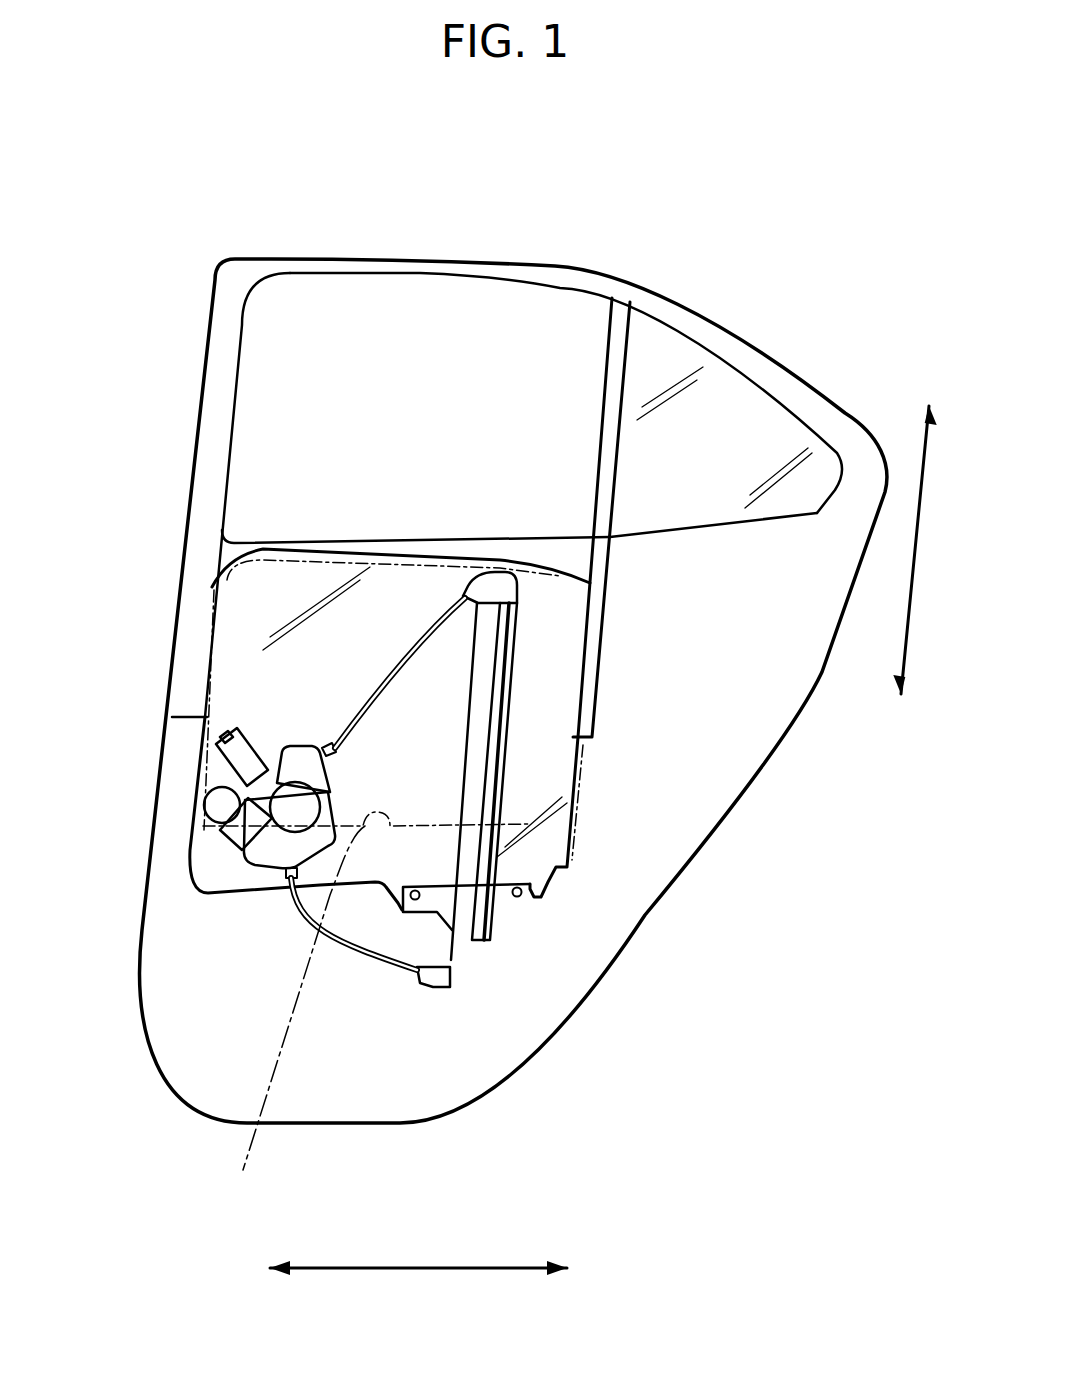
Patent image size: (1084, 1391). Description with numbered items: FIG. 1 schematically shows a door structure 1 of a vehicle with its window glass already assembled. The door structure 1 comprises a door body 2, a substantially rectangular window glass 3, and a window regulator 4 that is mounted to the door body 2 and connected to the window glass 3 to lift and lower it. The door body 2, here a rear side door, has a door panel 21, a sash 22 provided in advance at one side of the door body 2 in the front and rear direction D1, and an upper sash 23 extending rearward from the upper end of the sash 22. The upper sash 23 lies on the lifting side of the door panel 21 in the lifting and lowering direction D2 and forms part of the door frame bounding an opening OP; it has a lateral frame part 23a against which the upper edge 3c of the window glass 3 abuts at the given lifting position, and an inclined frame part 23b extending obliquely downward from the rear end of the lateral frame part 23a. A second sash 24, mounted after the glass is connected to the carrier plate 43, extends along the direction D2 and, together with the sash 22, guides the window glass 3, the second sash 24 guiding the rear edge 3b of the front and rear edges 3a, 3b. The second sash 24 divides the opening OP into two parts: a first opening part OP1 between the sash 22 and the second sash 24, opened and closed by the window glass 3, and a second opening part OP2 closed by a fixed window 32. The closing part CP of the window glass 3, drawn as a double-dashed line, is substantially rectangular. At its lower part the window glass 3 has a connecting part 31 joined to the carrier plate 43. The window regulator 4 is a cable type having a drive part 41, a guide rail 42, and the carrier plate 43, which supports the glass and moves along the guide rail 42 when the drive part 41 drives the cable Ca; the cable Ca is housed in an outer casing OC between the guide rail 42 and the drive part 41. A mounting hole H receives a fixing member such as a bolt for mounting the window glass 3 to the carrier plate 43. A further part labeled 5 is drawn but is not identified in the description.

The door structure 1 is at (803, 160).
The door body 2 is at (138, 1017).
The door panel 21 is at (217, 1043).
The sash 22 is at (217, 425).
The upper sash 23 is at (523, 135).
The lateral frame part 23a is at (493, 265).
The inclined frame part 23b is at (713, 336).
The second sash 24 is at (607, 447).
The fixed window 32 is at (733, 457).
The window glass 3 is at (215, 862).
The front edge 3a is at (193, 750).
The rear edge 3b is at (580, 770).
The upper edge 3c is at (343, 545).
The window regulator 4 is at (513, 763).
The drive part 41 is at (238, 760).
The guide rail 42 is at (467, 853).
The carrier plate 43 is at (505, 918).
The guide rail 5 is at (497, 583).
The connecting part 31 is at (543, 893).
The opening OP is at (427, 152).
The first opening part OP1 is at (362, 340).
The second opening part OP2 is at (687, 340).
The outer casing OC is at (397, 670).
The cable Ca is at (510, 697).
The closing part CP is at (291, 1018).
The mounting hole H is at (520, 900).
The front and rear direction D1 is at (417, 1268).
The lifting and lowering direction D2 is at (910, 555).